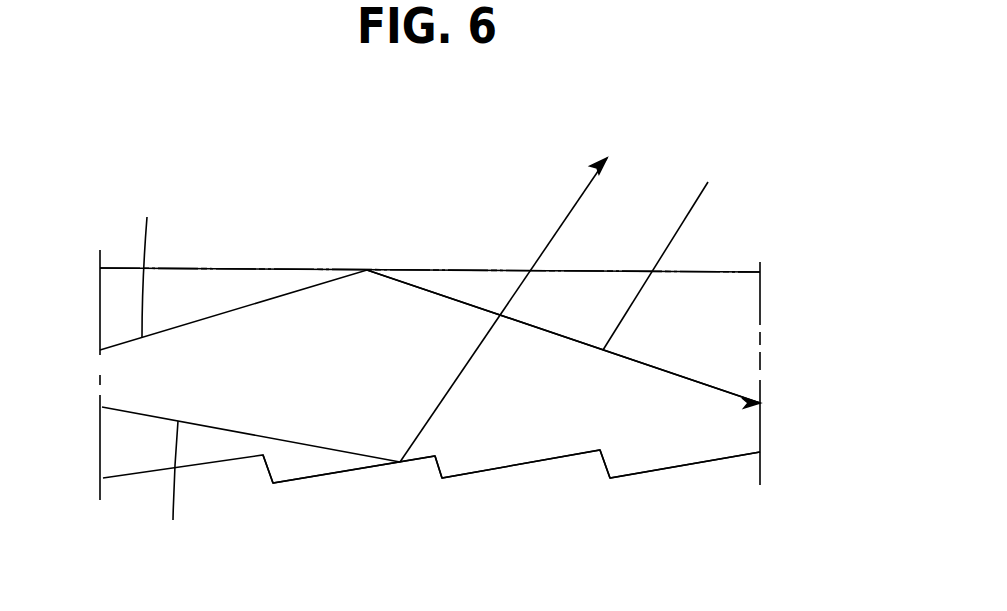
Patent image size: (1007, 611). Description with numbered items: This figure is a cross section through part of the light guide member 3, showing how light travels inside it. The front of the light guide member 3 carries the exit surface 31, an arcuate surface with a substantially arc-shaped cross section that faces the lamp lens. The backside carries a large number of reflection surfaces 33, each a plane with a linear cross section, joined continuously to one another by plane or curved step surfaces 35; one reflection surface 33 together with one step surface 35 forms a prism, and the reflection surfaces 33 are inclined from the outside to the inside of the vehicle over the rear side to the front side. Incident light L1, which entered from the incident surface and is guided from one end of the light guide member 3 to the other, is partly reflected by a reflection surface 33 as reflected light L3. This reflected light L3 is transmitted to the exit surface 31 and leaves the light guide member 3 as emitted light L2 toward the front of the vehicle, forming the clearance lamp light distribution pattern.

The light guide member 3 is at (395, 250).
The exit surface 31 is at (245, 268).
The reflection surface 33 is at (320, 475).
The step surface 35 is at (272, 464).
The incident light L1 is at (444, 351).
The emitted light L2 is at (555, 215).
The reflected light L3 is at (452, 372).